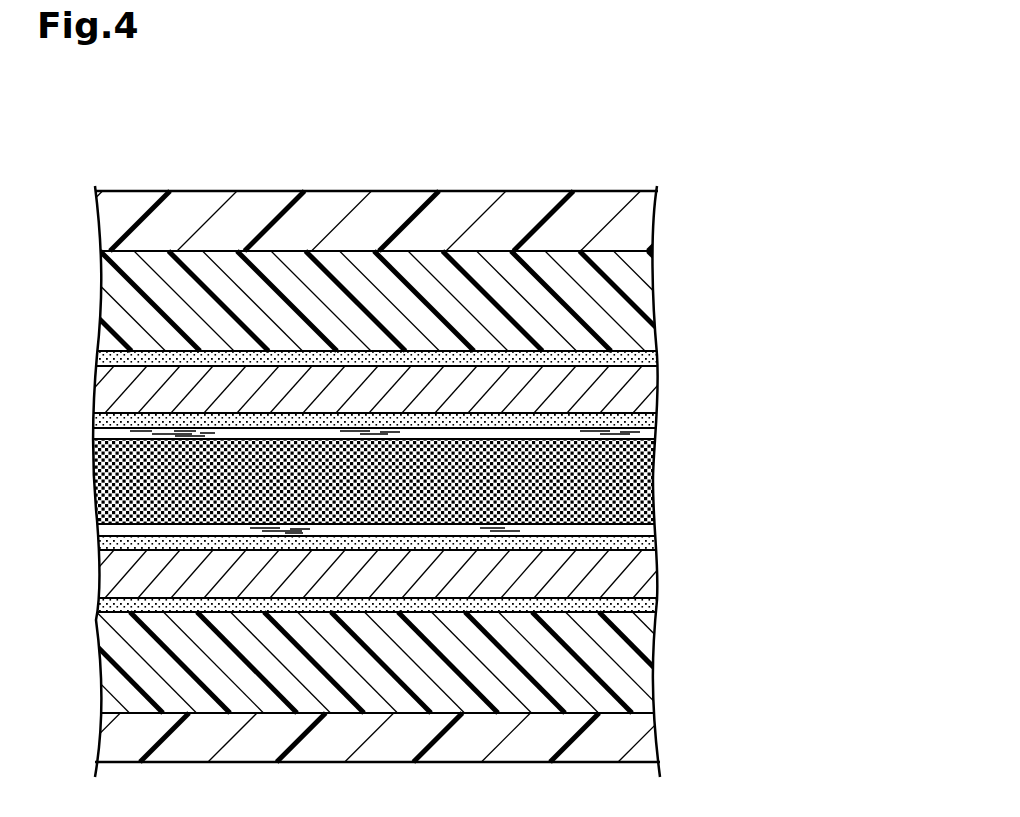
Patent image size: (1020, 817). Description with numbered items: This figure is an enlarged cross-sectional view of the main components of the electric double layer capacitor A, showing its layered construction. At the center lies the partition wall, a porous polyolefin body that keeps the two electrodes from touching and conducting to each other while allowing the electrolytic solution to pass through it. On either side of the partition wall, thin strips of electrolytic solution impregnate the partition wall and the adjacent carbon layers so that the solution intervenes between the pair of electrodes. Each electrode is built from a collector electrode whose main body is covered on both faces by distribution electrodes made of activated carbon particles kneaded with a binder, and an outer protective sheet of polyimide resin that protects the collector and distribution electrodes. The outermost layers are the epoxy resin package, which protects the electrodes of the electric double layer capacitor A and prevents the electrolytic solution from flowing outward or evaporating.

The electric double layer capacitor A is at (121, 158).